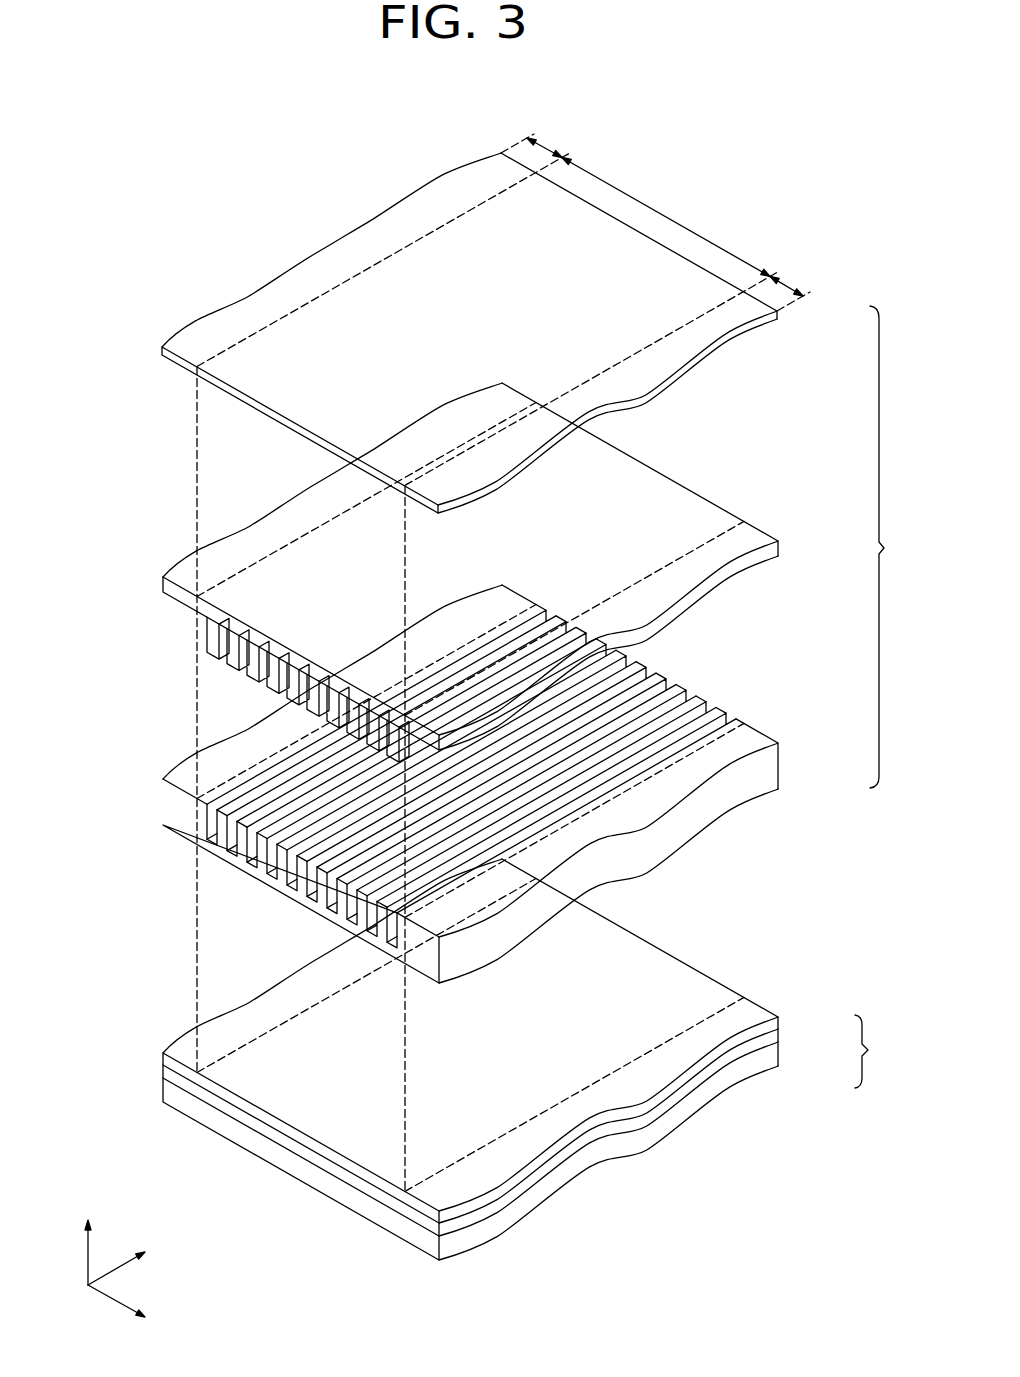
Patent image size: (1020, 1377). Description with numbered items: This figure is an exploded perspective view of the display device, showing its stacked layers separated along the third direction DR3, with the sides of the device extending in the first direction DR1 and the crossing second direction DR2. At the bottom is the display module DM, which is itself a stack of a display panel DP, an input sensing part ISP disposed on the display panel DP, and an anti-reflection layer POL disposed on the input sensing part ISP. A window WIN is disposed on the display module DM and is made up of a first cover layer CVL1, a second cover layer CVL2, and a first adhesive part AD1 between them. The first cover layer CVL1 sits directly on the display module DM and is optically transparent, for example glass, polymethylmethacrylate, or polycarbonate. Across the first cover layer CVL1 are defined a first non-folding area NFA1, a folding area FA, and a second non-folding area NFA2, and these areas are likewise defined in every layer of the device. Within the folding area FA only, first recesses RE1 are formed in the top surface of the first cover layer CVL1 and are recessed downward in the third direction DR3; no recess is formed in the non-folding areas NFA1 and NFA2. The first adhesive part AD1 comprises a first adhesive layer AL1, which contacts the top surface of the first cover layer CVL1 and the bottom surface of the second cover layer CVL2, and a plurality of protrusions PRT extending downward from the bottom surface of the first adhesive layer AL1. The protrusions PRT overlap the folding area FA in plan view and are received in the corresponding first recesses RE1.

The second cover layer CVL2 is at (775, 317).
The first non-folding area NFA1 is at (549, 138).
The folding area FA is at (487, 673).
The second non-folding area NFA2 is at (805, 282).
The window WIN is at (900, 547).
The first adhesive part AD1 is at (470, 568).
The first adhesive layer AL1 is at (432, 568).
The protrusions PRT is at (212, 636).
The first cover layer CVL1 is at (477, 783).
The first recess RE1 is at (208, 826).
The display module DM is at (529, 1058).
The anti-reflection layer POL is at (768, 1024).
The input sensing part ISP is at (768, 1036).
The display panel DP is at (768, 1058).
The first direction DR1 is at (139, 1313).
The second direction DR2 is at (139, 1259).
The third direction DR3 is at (89, 1239).